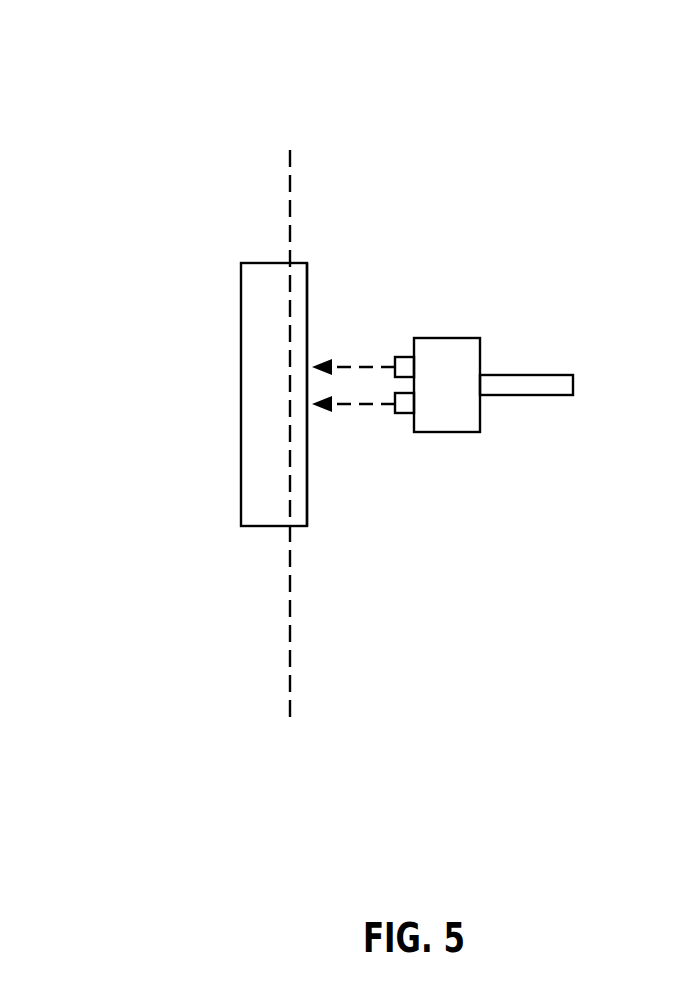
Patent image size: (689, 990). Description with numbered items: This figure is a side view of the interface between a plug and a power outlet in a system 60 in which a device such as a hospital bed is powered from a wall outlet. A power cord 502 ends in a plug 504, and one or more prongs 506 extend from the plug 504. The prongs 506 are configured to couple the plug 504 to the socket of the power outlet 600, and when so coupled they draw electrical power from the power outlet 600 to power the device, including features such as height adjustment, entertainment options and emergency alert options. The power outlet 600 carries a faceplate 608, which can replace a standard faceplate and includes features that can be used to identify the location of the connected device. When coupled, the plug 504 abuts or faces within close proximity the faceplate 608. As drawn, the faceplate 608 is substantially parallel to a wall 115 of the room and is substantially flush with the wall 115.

The system 60 is at (110, 78).
The wall 115 is at (290, 183).
The power outlet 600 is at (258, 318).
The faceplate 608 is at (295, 509).
The plug 504 is at (445, 357).
The power cord 502 is at (525, 395).
The prongs 506 is at (407, 357).